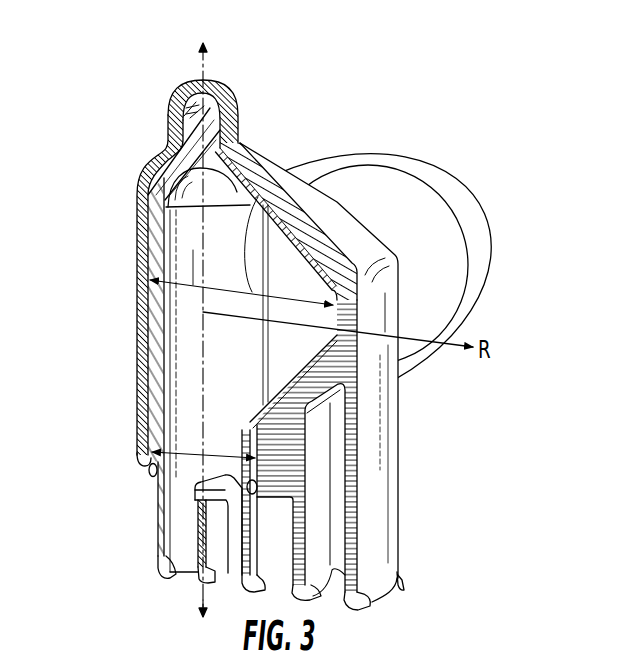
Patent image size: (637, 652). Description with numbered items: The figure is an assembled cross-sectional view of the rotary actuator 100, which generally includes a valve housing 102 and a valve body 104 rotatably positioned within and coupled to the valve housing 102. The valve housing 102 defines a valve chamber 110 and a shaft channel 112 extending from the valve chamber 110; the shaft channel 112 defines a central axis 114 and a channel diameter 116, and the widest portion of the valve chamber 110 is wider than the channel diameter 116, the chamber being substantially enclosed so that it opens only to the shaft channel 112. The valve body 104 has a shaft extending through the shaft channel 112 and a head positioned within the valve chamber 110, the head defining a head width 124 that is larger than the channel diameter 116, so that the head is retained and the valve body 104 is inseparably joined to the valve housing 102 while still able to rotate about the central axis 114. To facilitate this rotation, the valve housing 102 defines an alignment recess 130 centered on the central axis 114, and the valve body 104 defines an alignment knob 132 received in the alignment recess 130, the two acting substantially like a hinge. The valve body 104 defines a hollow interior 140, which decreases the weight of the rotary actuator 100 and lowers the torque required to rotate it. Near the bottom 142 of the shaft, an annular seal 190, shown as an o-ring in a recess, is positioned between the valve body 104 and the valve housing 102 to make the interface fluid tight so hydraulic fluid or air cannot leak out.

The rotary actuator 100 is at (105, 38).
The valve housing 102 is at (347, 236).
The valve body 104 is at (161, 250).
The valve chamber 110 is at (299, 314).
The shaft channel 112 is at (151, 420).
The central axis 114 is at (200, 597).
The channel diameter 116 is at (150, 453).
The head width 124 is at (266, 211).
The alignment recess 130 is at (167, 125).
The alignment knob 132 is at (207, 135).
The hollow interior 140 is at (254, 367).
The bottom of valve shaft 142 is at (157, 579).
The annular seal 190 is at (150, 474).